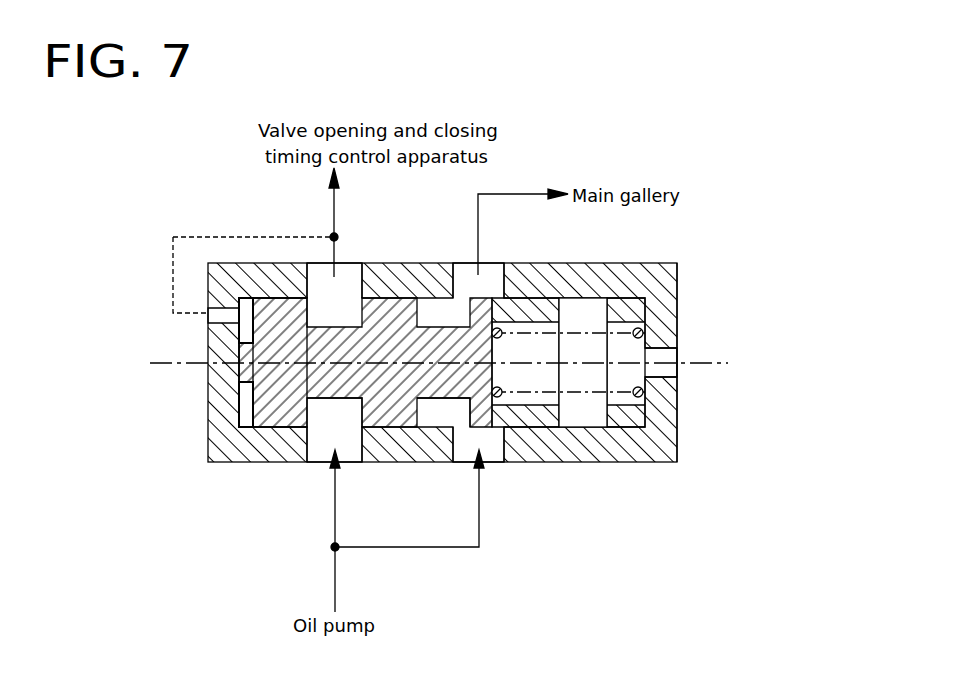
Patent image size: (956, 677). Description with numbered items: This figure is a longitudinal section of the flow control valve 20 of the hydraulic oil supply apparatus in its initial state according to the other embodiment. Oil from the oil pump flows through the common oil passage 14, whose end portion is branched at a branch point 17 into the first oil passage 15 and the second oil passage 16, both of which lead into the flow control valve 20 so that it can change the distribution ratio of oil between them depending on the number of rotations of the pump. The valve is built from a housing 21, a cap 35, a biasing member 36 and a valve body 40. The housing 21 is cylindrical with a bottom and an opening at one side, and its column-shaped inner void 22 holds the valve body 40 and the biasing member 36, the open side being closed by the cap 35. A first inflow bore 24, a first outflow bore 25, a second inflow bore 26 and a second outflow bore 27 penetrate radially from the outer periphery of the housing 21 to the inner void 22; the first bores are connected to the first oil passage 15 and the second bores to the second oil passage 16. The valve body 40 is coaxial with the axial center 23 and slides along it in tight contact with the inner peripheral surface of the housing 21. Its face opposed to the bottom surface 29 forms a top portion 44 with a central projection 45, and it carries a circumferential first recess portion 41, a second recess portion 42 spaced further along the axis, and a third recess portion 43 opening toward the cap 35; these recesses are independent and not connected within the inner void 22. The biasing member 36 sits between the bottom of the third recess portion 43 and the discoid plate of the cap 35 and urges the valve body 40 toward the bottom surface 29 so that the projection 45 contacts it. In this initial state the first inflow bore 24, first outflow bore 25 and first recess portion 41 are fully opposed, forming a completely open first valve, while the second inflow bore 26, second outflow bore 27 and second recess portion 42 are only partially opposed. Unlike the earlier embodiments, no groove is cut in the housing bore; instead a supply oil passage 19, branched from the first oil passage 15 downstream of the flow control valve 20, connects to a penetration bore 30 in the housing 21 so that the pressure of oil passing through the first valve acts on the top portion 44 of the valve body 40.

The common oil passage 14 is at (337, 580).
The first oil passage 15 is at (337, 516).
The second oil passage 16 is at (480, 525).
The branch point 17 is at (333, 548).
The supply oil passage 19 is at (227, 232).
The flow control valve 20 is at (158, 226).
The housing 21 is at (560, 462).
The inner void 22 is at (590, 318).
The axial center 23 is at (705, 360).
The first inflow bore 24 is at (320, 453).
The first outflow bore 25 is at (348, 266).
The second inflow bore 26 is at (495, 457).
The second outflow bore 27 is at (468, 266).
The bottom surface 29 is at (252, 428).
The penetration bore 30 is at (225, 320).
The cap 35 is at (677, 313).
The biasing member 36 is at (572, 393).
The valve body 40 is at (273, 430).
The first recess portion 41 is at (343, 403).
The second recess portion 42 is at (445, 410).
The third recess portion 43 is at (520, 325).
The top portion 44 is at (242, 398).
The projection 45 is at (240, 372).